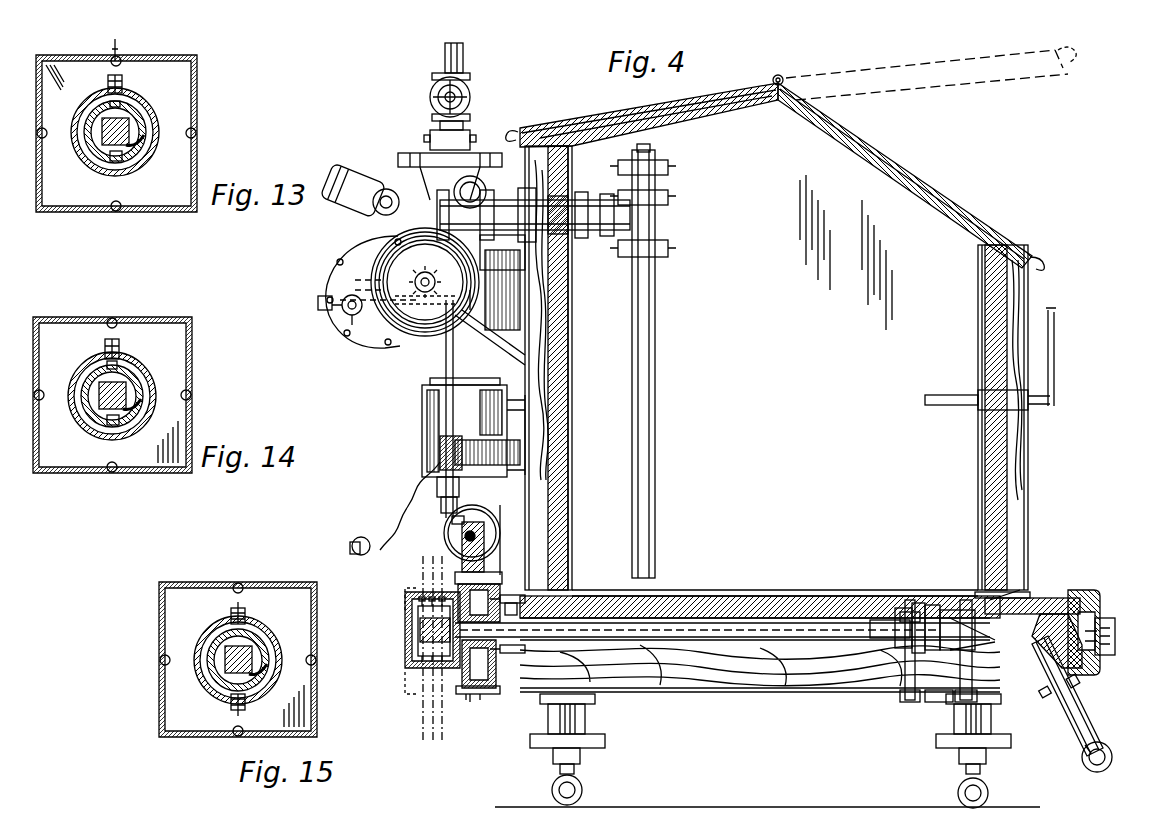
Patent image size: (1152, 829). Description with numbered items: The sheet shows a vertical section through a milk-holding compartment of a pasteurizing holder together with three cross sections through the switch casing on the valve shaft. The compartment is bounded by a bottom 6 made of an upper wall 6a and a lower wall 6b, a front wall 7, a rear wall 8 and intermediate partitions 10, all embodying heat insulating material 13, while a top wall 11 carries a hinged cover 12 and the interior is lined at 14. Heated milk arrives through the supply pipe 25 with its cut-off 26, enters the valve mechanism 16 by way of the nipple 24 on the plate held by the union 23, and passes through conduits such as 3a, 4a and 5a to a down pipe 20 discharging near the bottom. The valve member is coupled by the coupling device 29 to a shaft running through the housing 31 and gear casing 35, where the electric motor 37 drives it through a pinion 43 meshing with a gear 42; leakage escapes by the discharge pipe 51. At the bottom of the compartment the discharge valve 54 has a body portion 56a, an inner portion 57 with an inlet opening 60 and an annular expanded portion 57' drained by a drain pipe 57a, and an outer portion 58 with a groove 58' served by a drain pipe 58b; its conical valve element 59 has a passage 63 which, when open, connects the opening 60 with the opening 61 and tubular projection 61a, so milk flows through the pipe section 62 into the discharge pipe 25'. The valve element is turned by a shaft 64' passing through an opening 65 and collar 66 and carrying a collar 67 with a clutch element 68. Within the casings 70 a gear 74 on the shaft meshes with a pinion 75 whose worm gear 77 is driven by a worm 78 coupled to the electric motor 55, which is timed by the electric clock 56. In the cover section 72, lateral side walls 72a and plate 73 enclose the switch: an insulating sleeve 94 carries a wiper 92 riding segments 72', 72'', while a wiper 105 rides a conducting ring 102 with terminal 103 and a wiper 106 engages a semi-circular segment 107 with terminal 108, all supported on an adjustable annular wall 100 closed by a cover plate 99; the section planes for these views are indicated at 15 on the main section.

In FIG. 4, the conduit 4a is at (454, 186).
In FIG. 4, the conduit 3a is at (533, 211).
In FIG. 4, the conduit 5a is at (352, 210).
In FIG. 4, the bottom 6 is at (702, 600).
In FIG. 4, the upper wall 6a is at (735, 610).
In FIG. 4, the lower wall 6b is at (722, 694).
In FIG. 4, the front wall 7 is at (506, 540).
In FIG. 4, the rear wall 8 is at (450, 43).
In FIG. 4, the intermediate partitions 10 is at (820, 265).
In FIG. 4, the top wall 11 is at (702, 122).
In FIG. 4, the cover 12 is at (935, 90).
In FIG. 4, the heat insulating material 13 is at (572, 330).
In FIG. 4, the lining 14 is at (572, 478).
In FIG. 4, the sheathing 15 is at (418, 588).
In FIG. 4, the valve mechanism 16 is at (398, 160).
In FIG. 4, the down pipes 20 is at (655, 340).
In FIG. 4, the union 23 is at (470, 152).
In FIG. 4, the nipple 24 is at (430, 140).
In FIG. 4, the supply pipe 25 is at (430, 59).
In FIG. 4, the discharge pipe 25' is at (1065, 759).
In FIG. 4, the cut-off 26 is at (470, 97).
In FIG. 4, the coupling device 29 is at (521, 223).
In FIG. 4, the housing 31 is at (506, 272).
In FIG. 4, the gear casing 35 is at (476, 325).
In FIG. 4, the electric motor 37 is at (380, 250).
In FIG. 4, the gear 42 is at (350, 335).
In FIG. 4, the pinion 43 is at (421, 278).
In FIG. 4, the discharge pipe 51 is at (386, 212).
In FIG. 4, the discharge valve 54 is at (1035, 600).
In FIG. 4, the electric motor 55 is at (482, 508).
In FIG. 4, the electric clock 56 is at (422, 440).
In FIG. 4, the body portion 56a is at (1030, 590).
In FIG. 4, the inner portion 57 is at (914, 607).
In FIG. 4, the annular expanded portion 57' is at (890, 607).
In FIG. 4, the drain pipe 57a is at (905, 702).
In FIG. 4, the outer portion 58 is at (1084, 621).
In FIG. 4, the groove 58' is at (938, 598).
In FIG. 4, the drain pipe 58b is at (973, 704).
In FIG. 4, the valve element 59 is at (1102, 616).
In FIG. 4, the inlet opening 60 is at (958, 612).
In FIG. 4, the opening 61 is at (1063, 703).
In FIG. 4, the tubular projection 61a is at (1029, 705).
In FIG. 4, the pipe section 62 is at (1062, 690).
In FIG. 4, the passage 63 is at (975, 634).
In FIG. 13, the shaft 64' is at (106, 157).
In FIG. 14, the shaft 64' is at (105, 446).
In FIG. 15, the shaft 64' is at (214, 685).
In FIG. 4, the shaft 64' is at (722, 597).
In FIG. 4, the opening 65 is at (494, 676).
In FIG. 4, the collar 66 is at (515, 590).
In FIG. 4, the collar 67 is at (880, 620).
In FIG. 4, the clutch element 68 is at (928, 702).
In FIG. 4, the casings 70 is at (482, 700).
In FIG. 4, the cover section 72 is at (461, 710).
In FIG. 15, the conducting ring segment 72' is at (270, 665).
In FIG. 15, the conducting ring segment 72'' is at (266, 610).
In FIG. 13, the lateral side walls 72a is at (2, 157).
In FIG. 14, the lateral side walls 72a is at (111, 413).
In FIG. 4, the lateral side walls 72a is at (418, 664).
In FIG. 4, the plate 73 is at (405, 650).
In FIG. 4, the gear 74 is at (471, 702).
In FIG. 4, the pinion 75 is at (500, 576).
In FIG. 4, the worm gear 77 is at (484, 540).
In FIG. 4, the worm 78 is at (455, 522).
In FIG. 15, the wiper 92 is at (238, 659).
In FIG. 13, the sleeve 94 is at (66, 88).
In FIG. 14, the sleeve 94 is at (98, 413).
In FIG. 15, the sleeve 94 is at (221, 651).
In FIG. 4, the sleeve 94 is at (420, 630).
In FIG. 4, the cover plate 99 is at (418, 614).
In FIG. 13, the annular wall 100 is at (123, 140).
In FIG. 14, the annular wall 100 is at (120, 391).
In FIG. 15, the annular wall 100 is at (238, 646).
In FIG. 13, the conducting ring 102 is at (147, 105).
In FIG. 13, the terminal 103 is at (136, 66).
In FIG. 13, the wiper 105 is at (172, 143).
In FIG. 14, the wiper 106 is at (145, 416).
In FIG. 14, the semi-circular conducting segment 107 is at (84, 361).
In FIG. 14, the terminal 108 is at (140, 331).